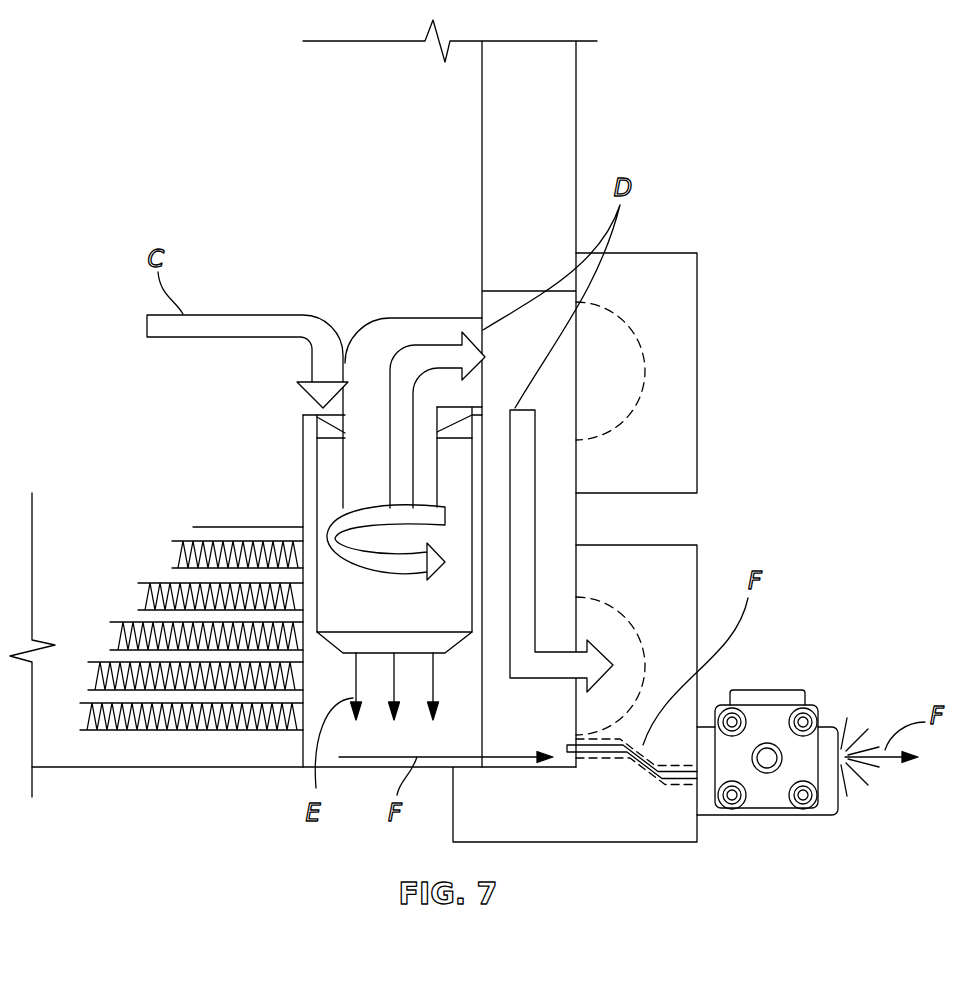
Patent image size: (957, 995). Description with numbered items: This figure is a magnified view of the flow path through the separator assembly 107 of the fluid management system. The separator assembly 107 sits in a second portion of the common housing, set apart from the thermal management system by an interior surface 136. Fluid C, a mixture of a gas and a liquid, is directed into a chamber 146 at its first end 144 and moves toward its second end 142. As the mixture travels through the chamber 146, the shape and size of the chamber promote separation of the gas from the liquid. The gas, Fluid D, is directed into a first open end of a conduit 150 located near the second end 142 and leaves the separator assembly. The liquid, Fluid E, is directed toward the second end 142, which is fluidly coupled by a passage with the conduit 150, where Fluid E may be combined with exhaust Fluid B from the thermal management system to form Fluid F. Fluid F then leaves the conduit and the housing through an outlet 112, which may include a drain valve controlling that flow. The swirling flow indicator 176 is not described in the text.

The separator assembly 107 is at (378, 140).
The interior surface 136 is at (293, 172).
The first end of the chamber 144 is at (316, 426).
The conduit 150 is at (343, 468).
The swirl air flow arrow 176 is at (327, 524).
The chamber 146 is at (320, 592).
The second end of the chamber 142 is at (317, 632).
The outlet 112 is at (828, 706).